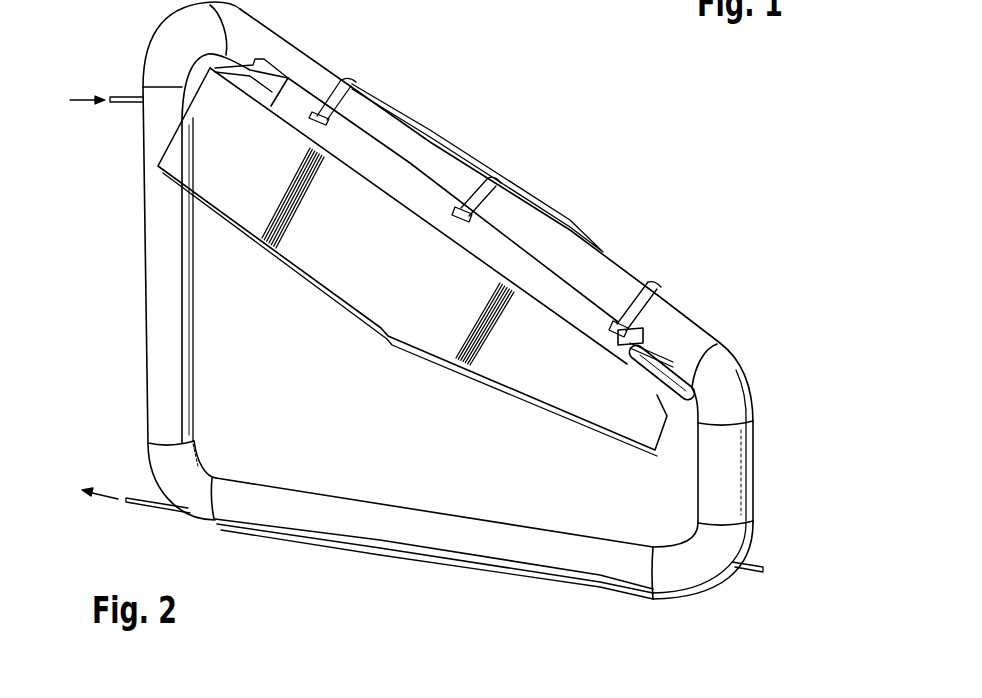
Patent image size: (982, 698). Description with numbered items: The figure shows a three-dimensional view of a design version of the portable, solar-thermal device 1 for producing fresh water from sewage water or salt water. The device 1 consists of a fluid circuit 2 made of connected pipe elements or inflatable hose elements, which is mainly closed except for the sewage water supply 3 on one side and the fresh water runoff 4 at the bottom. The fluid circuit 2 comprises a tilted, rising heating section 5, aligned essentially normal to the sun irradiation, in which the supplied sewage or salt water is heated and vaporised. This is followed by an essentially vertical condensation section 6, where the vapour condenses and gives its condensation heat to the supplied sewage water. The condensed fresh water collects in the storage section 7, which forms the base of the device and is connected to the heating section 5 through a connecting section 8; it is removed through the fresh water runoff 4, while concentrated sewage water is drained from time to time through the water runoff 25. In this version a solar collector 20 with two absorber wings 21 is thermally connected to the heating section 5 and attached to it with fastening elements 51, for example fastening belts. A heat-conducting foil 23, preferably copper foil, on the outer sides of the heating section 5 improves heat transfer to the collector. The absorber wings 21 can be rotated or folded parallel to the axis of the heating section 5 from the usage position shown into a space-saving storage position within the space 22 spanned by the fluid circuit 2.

The portable, solar-thermal device 1 is at (635, 221).
The fluid circuit 2 is at (147, 381).
The sewage water supply 3 is at (119, 96).
The fresh water runoff 4 is at (154, 510).
The heating section 5 is at (438, 158).
The condensation section 6 is at (160, 266).
The storage section 7 is at (525, 545).
The connecting section 8 is at (723, 481).
The solar collector 20 is at (580, 228).
The absorber wings 21 is at (525, 190).
The space spanned by fluid circuit 22 is at (345, 423).
The heat-conducting foil 23 is at (270, 62).
The water runoff 25 is at (749, 572).
The fastening elements 51 is at (343, 85).